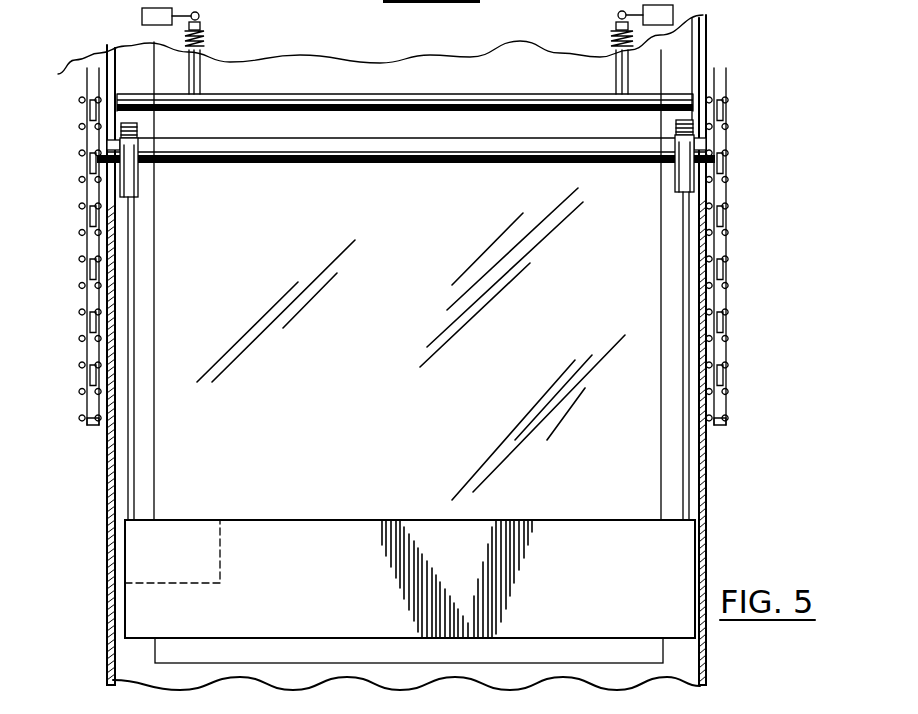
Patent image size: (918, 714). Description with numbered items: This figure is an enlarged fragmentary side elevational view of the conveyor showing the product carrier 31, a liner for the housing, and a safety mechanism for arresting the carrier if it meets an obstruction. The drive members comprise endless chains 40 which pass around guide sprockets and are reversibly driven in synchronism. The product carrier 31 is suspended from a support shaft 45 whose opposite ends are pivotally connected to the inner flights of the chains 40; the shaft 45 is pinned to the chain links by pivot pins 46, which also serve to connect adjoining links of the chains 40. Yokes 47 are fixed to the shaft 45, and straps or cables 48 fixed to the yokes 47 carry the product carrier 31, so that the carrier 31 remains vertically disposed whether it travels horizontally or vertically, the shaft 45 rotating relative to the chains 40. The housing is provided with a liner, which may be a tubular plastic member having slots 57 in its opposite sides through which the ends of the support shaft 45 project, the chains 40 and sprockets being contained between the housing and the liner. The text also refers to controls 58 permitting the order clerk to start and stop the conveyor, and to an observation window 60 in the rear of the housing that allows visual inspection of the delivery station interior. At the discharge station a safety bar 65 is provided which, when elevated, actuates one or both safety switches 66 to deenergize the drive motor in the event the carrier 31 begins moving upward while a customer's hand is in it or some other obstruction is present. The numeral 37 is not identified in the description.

The product carrier 31 is at (340, 533).
The chain end 37 is at (87, 421).
The endless chain 40 is at (84, 221).
The support shaft 45 is at (406, 147).
The pivot pin 46 is at (84, 151).
The yoke 47 is at (133, 182).
The strap or cable 48 is at (135, 312).
The slot 57 is at (110, 508).
The controls 58 is at (757, 55).
The observation window 60 is at (378, 357).
The safety bar 65 is at (368, 97).
The safety switch 66 is at (142, 15).